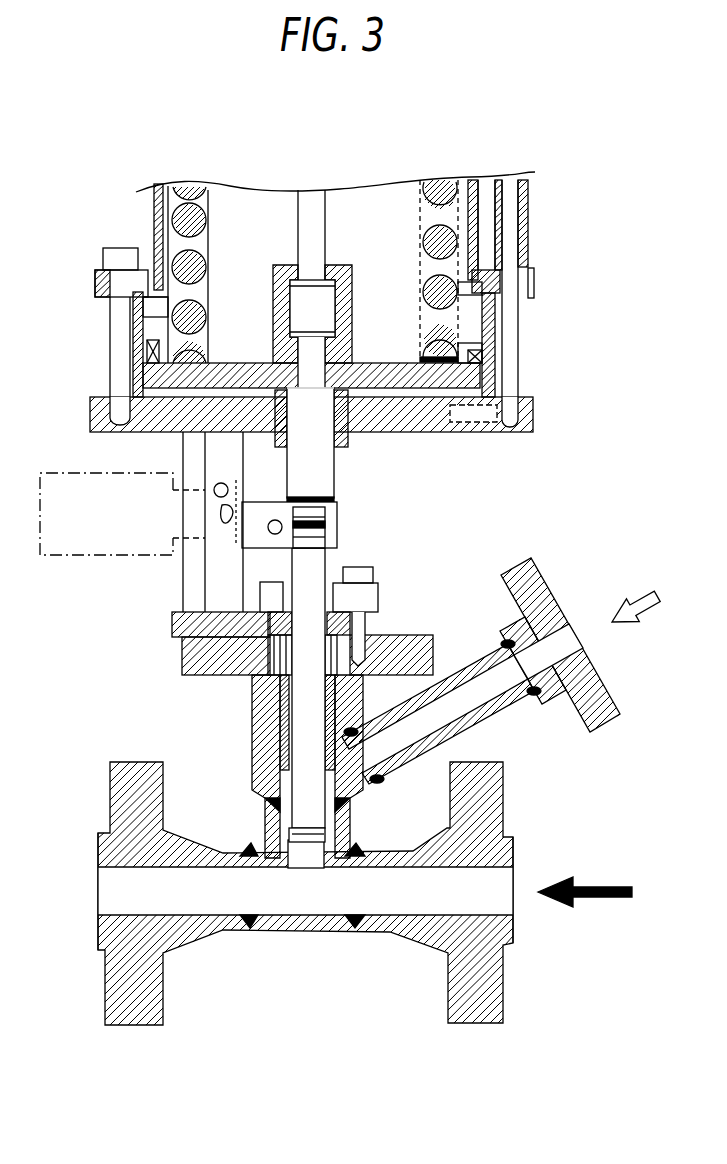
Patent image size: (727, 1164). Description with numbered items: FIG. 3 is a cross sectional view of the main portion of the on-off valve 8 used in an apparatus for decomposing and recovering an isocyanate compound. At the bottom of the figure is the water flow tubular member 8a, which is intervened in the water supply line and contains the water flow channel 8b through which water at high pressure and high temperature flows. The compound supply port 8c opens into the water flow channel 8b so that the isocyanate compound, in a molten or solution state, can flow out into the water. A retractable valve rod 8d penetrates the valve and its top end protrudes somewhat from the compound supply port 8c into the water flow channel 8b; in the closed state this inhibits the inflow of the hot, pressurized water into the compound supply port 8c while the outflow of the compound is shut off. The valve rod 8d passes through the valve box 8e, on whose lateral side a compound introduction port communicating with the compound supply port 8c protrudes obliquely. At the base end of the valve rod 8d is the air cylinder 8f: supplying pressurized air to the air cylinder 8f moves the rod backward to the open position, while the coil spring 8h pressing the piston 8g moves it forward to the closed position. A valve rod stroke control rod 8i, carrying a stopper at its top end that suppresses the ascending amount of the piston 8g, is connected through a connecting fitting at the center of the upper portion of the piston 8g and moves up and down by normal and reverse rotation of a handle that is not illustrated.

The on-off valve 8 is at (536, 481).
The water flow tubular member 8a is at (402, 935).
The water flow channel 8b is at (203, 900).
The compound supply port 8c is at (320, 855).
The valve rod 8d is at (297, 717).
The valve box 8e is at (250, 728).
The air cylinder 8f is at (78, 413).
The piston 8g is at (231, 372).
The coil spring 8h is at (182, 214).
The valve rod stroke control rod 8i is at (328, 238).